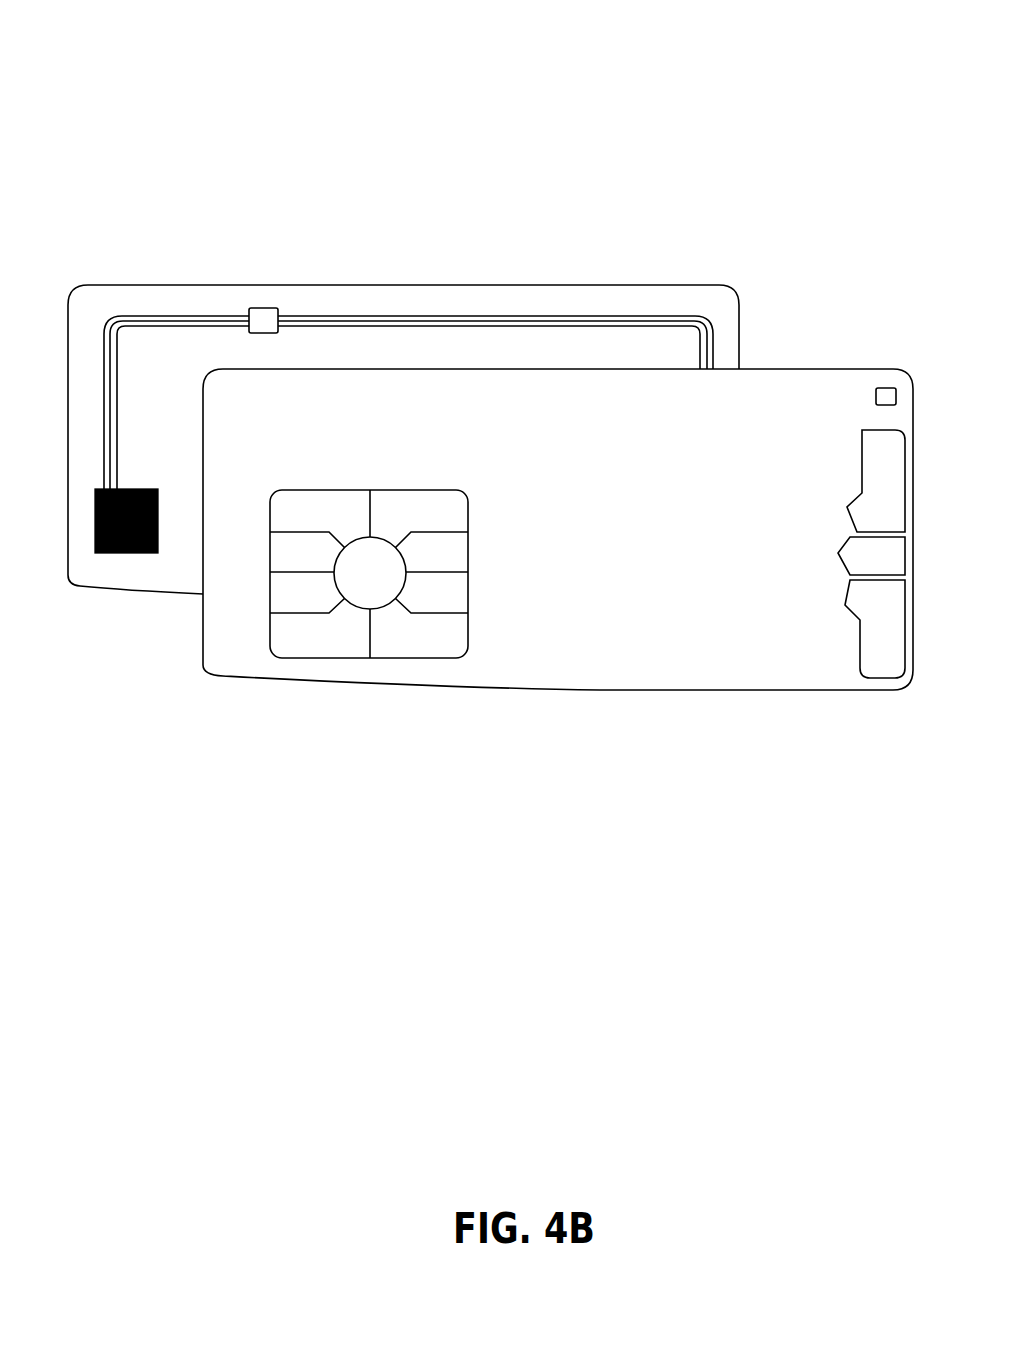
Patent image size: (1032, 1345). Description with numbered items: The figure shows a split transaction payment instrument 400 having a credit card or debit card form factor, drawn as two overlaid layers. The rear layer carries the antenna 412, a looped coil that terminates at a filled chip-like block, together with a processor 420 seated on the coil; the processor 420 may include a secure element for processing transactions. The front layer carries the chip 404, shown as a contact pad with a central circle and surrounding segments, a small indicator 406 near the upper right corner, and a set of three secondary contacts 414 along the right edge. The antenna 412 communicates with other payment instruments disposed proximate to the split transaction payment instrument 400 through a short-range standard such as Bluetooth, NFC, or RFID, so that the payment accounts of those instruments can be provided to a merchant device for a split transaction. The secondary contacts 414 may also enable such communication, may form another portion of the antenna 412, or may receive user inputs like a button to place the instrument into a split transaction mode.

The split transaction payment instrument 400 is at (140, 80).
The chip 404 is at (280, 647).
The indicator 406 is at (858, 397).
The antenna 412 is at (108, 302).
The secondary contacts 414 is at (838, 523).
The processor 420 is at (298, 299).